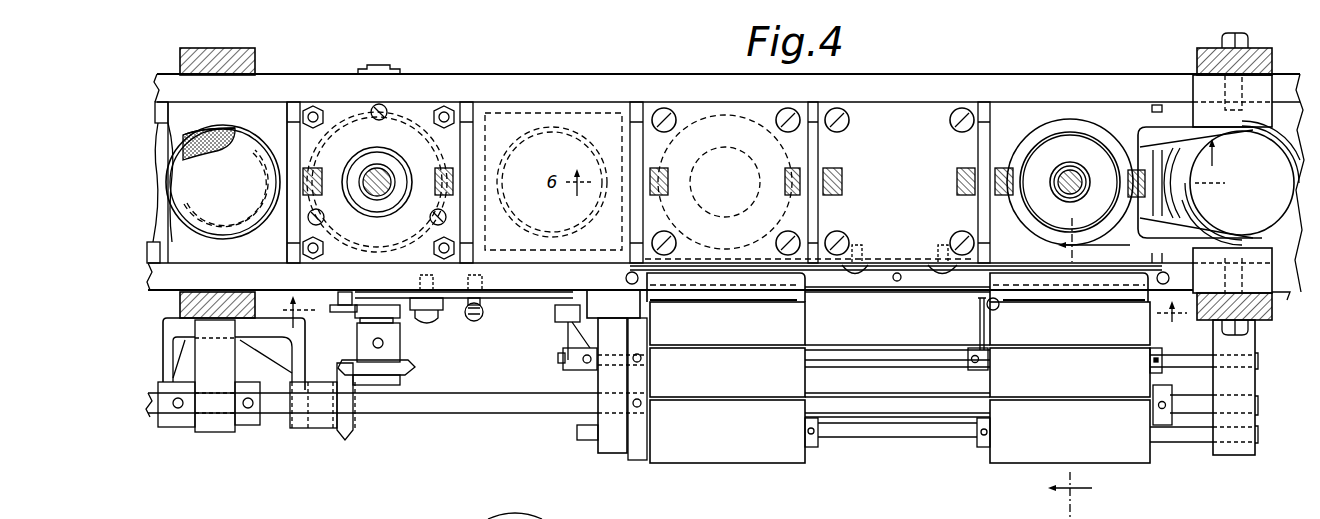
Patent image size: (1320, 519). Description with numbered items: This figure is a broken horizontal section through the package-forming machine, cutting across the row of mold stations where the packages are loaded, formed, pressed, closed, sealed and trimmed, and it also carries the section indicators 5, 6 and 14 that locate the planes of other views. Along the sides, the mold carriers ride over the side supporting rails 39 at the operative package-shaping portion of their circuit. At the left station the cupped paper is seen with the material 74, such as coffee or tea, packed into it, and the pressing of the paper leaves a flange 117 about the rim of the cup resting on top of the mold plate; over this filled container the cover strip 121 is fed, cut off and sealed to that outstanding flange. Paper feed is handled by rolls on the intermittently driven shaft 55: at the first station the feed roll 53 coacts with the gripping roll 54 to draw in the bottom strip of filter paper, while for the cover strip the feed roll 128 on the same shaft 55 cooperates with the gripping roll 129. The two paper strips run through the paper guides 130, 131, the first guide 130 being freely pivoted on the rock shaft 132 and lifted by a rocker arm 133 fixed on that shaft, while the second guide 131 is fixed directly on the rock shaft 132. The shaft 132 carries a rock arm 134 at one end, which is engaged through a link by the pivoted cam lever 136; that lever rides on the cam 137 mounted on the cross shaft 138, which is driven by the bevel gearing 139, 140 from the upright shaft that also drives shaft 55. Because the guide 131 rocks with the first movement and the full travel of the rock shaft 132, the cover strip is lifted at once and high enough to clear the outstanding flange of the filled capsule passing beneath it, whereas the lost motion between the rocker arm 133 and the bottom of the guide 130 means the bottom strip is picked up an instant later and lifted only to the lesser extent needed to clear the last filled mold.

The flange 117 is at (228, 128).
The cross shaft 138 is at (387, 65).
The side supporting rails 39 is at (156, 182).
The material 74 is at (207, 148).
The cover strip 121 is at (223, 182).
The cam 137 is at (338, 290).
The section line 6 is at (1219, 168).
The section line 5 is at (1096, 232).
The section line 14 is at (724, 319).
The bevel gearing 139 is at (347, 360).
The cam lever 136 is at (498, 303).
The rock arm 134 is at (567, 328).
The bevel gearing 140 is at (345, 438).
The shaft 55 is at (468, 407).
The paper guide 131 is at (717, 292).
The feed roll 128 is at (727, 372).
The gripping roll 129 is at (727, 431).
The rock shaft 132 is at (853, 358).
The rocker arm 133 is at (980, 310).
The paper guide 130 is at (1052, 292).
The feed roll 53 is at (1070, 372).
The gripping roll 54 is at (1070, 431).